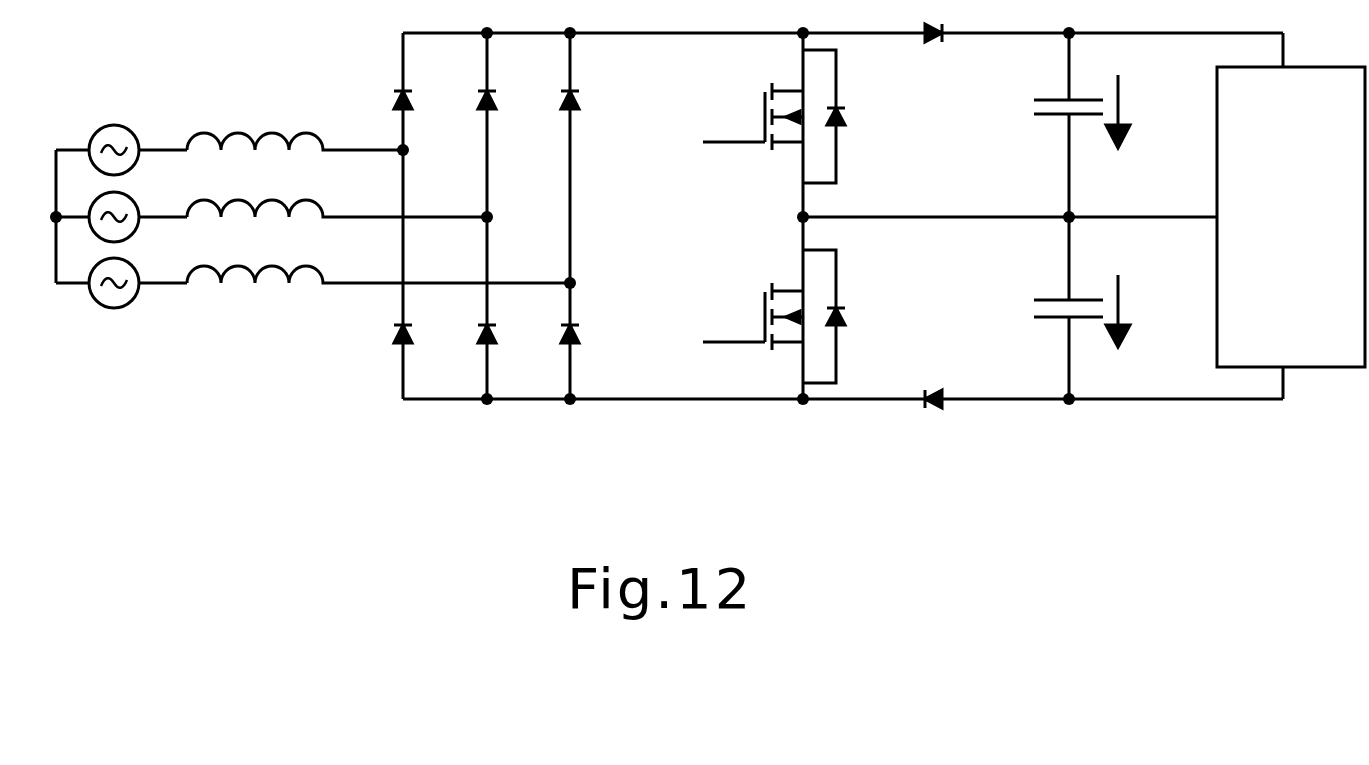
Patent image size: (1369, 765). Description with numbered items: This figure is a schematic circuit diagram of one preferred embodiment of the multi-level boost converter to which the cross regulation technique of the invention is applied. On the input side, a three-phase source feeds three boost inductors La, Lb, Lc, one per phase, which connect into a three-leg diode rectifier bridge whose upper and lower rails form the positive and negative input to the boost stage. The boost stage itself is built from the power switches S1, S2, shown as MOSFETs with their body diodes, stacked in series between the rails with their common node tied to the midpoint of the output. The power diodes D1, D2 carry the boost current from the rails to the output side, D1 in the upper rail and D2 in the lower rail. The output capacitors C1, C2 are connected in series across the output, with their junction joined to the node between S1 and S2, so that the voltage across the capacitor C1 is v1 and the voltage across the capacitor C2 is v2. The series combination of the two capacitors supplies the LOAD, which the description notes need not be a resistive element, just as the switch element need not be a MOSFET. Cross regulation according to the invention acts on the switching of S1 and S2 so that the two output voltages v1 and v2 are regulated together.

The phase a input inductor La is at (295, 137).
The phase b input inductor Lb is at (337, 203).
The phase c input inductor Lc is at (378, 270).
The power switch S1 is at (774, 116).
The power switch S2 is at (774, 316).
The power diode D1 is at (924, 57).
The power diode D2 is at (924, 378).
The output capacitor C1 is at (1039, 117).
The output capacitor C2 is at (1039, 303).
The voltage across first capacitor v1 is at (1133, 111).
The voltage across second capacitor v2 is at (1132, 311).
The load LOAD is at (1291, 217).